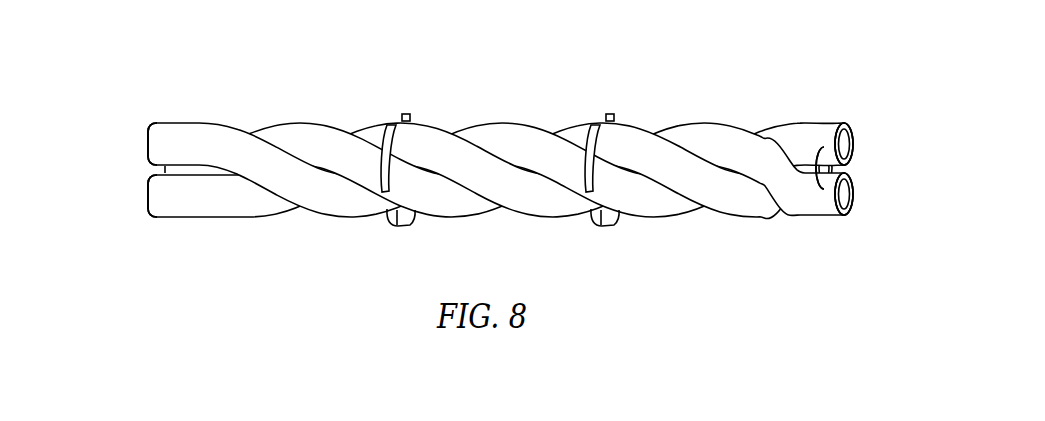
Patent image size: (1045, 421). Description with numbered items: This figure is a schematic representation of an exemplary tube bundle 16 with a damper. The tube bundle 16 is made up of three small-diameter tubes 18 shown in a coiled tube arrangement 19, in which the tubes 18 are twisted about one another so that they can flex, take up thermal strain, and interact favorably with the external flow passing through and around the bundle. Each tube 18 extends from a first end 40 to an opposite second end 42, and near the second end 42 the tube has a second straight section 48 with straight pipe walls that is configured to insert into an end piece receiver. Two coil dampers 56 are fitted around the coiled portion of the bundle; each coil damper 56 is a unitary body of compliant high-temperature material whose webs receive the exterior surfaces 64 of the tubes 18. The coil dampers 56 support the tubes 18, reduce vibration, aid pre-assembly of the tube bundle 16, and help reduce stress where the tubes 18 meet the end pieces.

The tube bundle 16 is at (495, 153).
The tube 18 is at (190, 122).
The coiled tube arrangement 19 is at (500, 153).
The first end 40 is at (104, 146).
The second end 42 is at (876, 148).
The second straight section 48 is at (163, 122).
The coil damper 56 is at (408, 114).
The exterior surfaces 64 is at (404, 190).